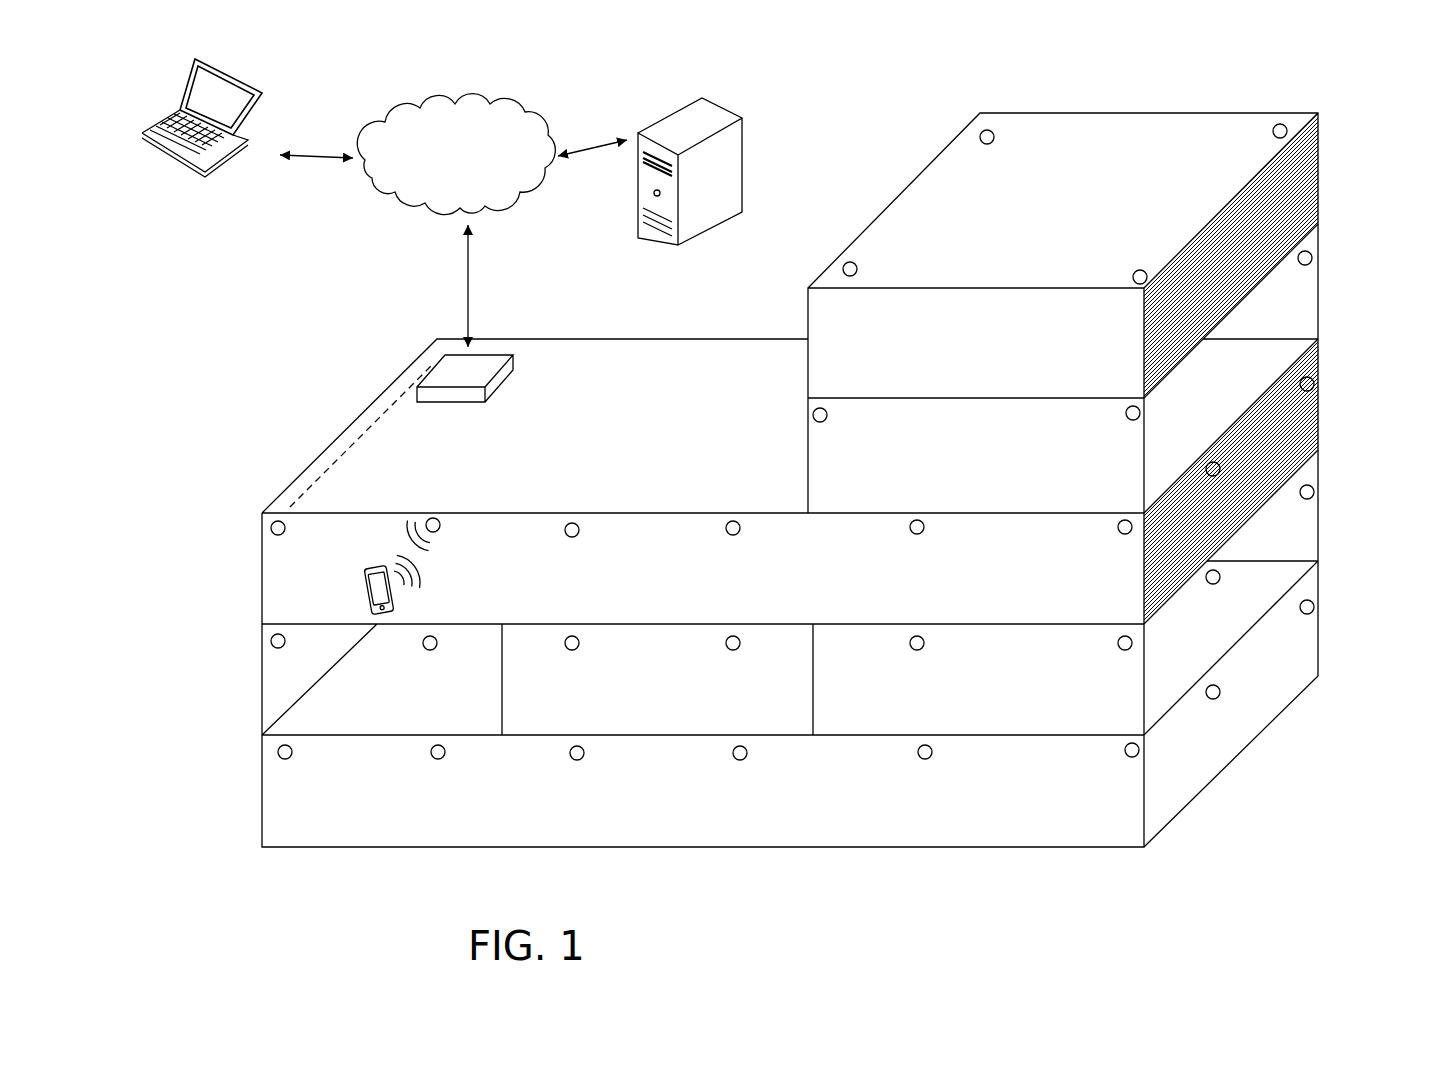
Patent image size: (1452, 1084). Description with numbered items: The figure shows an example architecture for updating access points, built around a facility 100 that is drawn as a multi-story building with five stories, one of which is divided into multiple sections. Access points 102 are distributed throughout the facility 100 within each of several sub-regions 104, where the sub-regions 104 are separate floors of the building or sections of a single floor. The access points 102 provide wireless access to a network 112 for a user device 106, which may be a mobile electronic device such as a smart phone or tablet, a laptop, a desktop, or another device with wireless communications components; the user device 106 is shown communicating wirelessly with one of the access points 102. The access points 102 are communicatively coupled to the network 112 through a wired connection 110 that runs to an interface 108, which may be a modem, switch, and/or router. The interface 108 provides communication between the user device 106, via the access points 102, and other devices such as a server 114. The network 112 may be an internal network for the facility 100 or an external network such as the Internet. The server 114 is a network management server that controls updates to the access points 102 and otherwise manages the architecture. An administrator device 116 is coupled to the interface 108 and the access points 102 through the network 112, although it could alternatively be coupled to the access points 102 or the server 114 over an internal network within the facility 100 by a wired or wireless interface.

The facility 100 is at (1322, 111).
The access point 102 is at (763, 407).
The sub-region 104 is at (703, 571).
The user device 106 is at (367, 578).
The interface 108 is at (457, 370).
The wired connection 110 is at (353, 430).
The network 112 is at (410, 140).
The server 114 is at (662, 117).
The administrator device 116 is at (157, 122).